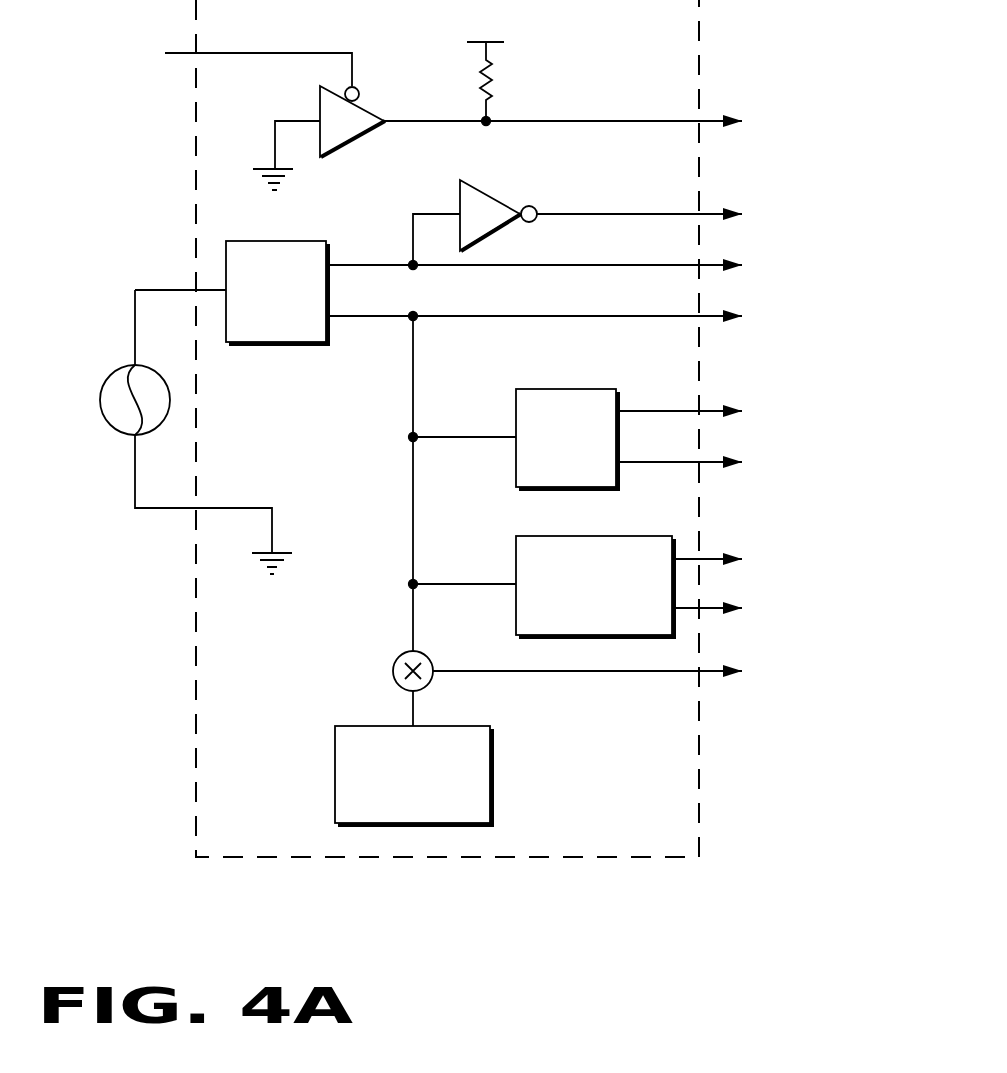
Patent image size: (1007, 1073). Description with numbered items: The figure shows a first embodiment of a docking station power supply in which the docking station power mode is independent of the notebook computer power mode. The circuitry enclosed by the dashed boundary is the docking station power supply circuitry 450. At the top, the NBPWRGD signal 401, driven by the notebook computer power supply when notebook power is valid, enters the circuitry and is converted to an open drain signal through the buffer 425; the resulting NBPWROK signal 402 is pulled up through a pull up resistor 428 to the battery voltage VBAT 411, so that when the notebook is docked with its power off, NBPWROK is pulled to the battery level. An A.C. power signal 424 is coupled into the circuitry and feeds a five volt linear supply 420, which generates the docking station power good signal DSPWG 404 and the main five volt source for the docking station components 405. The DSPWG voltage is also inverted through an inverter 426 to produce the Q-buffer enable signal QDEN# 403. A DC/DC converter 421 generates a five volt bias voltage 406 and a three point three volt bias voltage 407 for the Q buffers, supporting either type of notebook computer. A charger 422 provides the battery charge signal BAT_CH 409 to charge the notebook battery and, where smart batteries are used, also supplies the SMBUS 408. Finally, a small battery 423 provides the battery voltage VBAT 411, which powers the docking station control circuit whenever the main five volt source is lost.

The NBPWRGD signal 401 is at (108, 42).
The NBPWROK signal 402 is at (857, 120).
The QDEN# enable signal 403 is at (828, 213).
The DSPWG docking station power good signal 404 is at (836, 263).
The DSVCC_5V main 5 volt source 405 is at (858, 313).
The 5 volt bias voltage 406 is at (784, 410).
The 3.3 volt bias voltage 407 is at (800, 462).
The SMBUS 408 is at (832, 560).
The BAT_CH battery charge signal 409 is at (838, 610).
The VBAT battery voltage 411 is at (460, 26).
The 5 volt linear supply 420 is at (320, 333).
The DC/DC converter 421 is at (610, 481).
The charger 422 is at (664, 629).
The small battery 423 is at (483, 817).
The A.C. power signal 424 is at (108, 375).
The buffer 425 is at (354, 133).
The inverter 426 is at (495, 225).
The pull up resistor 428 is at (478, 80).
The docking station power supply circuitry 450 is at (687, 853).